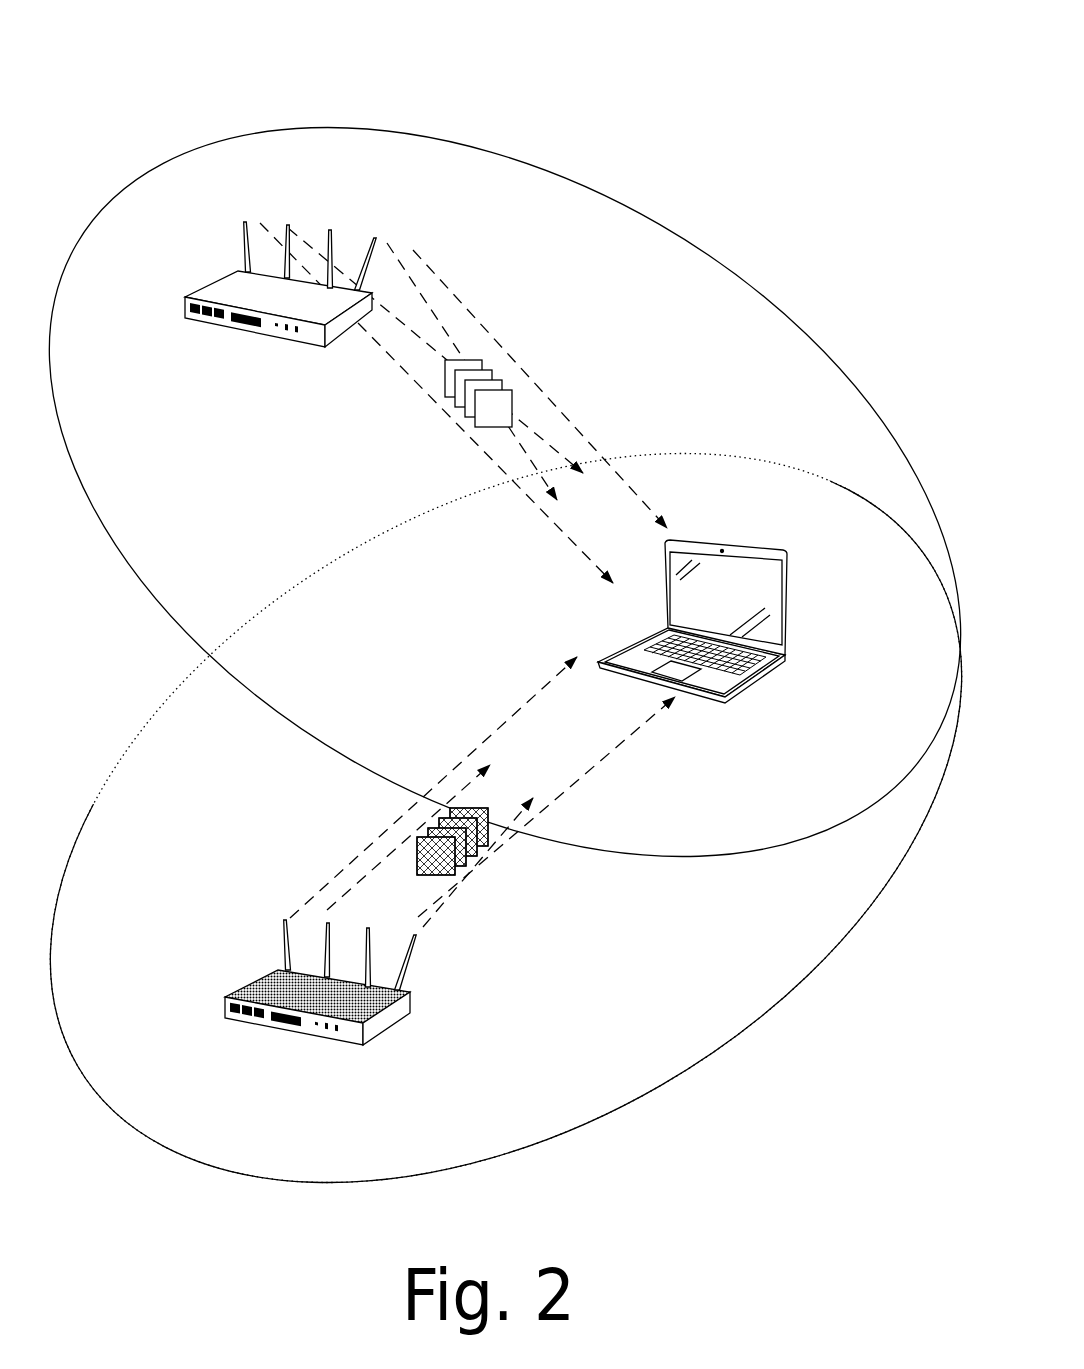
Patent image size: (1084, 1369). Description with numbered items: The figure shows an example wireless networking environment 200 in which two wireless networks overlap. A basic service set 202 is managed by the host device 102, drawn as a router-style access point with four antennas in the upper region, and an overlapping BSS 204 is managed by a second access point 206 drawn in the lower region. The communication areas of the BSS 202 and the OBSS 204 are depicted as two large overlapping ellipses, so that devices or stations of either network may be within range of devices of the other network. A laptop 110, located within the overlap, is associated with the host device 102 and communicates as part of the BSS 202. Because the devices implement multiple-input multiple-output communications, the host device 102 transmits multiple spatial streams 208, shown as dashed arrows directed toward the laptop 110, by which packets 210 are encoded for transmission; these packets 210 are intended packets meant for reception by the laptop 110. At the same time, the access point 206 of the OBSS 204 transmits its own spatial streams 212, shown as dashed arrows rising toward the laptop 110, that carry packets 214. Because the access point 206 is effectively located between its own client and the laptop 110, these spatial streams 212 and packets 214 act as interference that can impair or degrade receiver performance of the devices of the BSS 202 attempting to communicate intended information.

The wireless networking environment 200 is at (150, 57).
The host device 102 is at (235, 275).
The basic service set 202 is at (257, 483).
The overlapping BSS 204 is at (256, 843).
The access point 206 is at (270, 972).
The spatial streams 208 is at (462, 303).
The packets 210 is at (515, 393).
The laptop 110 is at (757, 545).
The spatial streams 212 is at (465, 908).
The packets 214 is at (488, 847).